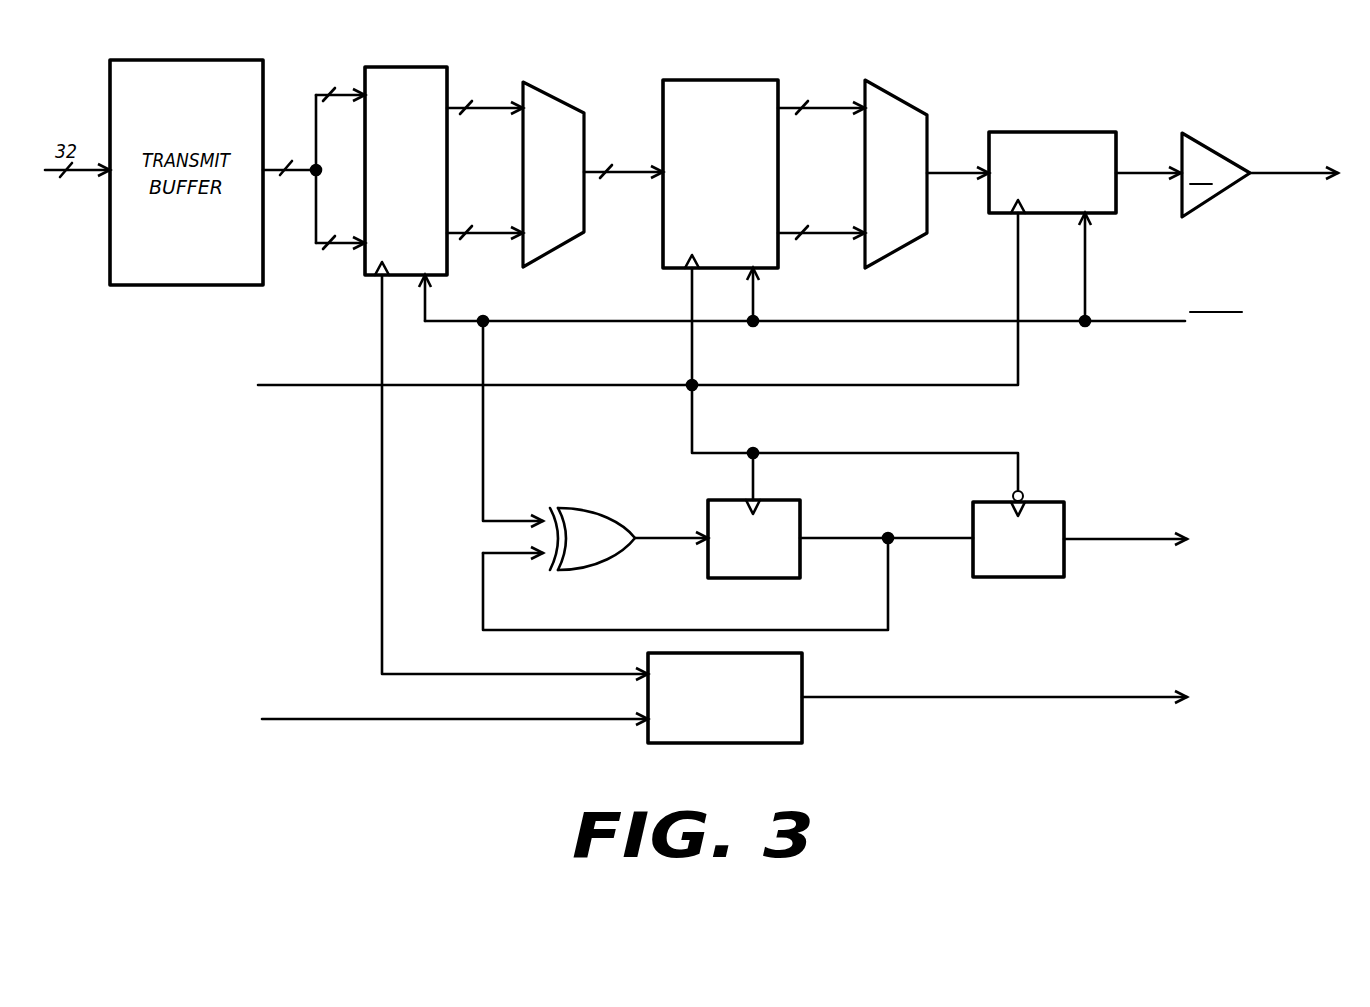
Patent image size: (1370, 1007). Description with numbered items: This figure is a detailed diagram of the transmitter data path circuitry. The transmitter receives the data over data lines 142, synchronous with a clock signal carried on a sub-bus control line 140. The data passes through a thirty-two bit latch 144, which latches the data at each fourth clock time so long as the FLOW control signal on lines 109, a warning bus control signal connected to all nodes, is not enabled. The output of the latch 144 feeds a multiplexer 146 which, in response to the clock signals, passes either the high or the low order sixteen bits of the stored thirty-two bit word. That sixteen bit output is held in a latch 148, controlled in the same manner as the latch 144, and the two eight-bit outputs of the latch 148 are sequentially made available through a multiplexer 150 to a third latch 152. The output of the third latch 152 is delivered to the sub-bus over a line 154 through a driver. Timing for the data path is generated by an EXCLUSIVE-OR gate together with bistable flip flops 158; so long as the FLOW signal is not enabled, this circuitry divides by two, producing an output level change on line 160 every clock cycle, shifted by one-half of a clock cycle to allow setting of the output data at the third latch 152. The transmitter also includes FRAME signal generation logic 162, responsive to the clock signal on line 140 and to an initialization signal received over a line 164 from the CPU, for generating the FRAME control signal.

The FLOW control signal lines 109 is at (1062, 324).
The sub-bus control line 140 is at (290, 388).
The data lines 142 is at (274, 160).
The thirty-two bit latch 144 is at (418, 173).
The multiplexer 146 is at (567, 173).
The latch 148 is at (734, 173).
The multiplexer 150 is at (907, 173).
The third latch 152 is at (1066, 173).
The line 154 is at (1290, 171).
The bistable flip flops 158 is at (796, 516).
The line 160 is at (1125, 536).
The FRAME signal generation logic 162 is at (804, 668).
The line 164 is at (420, 721).